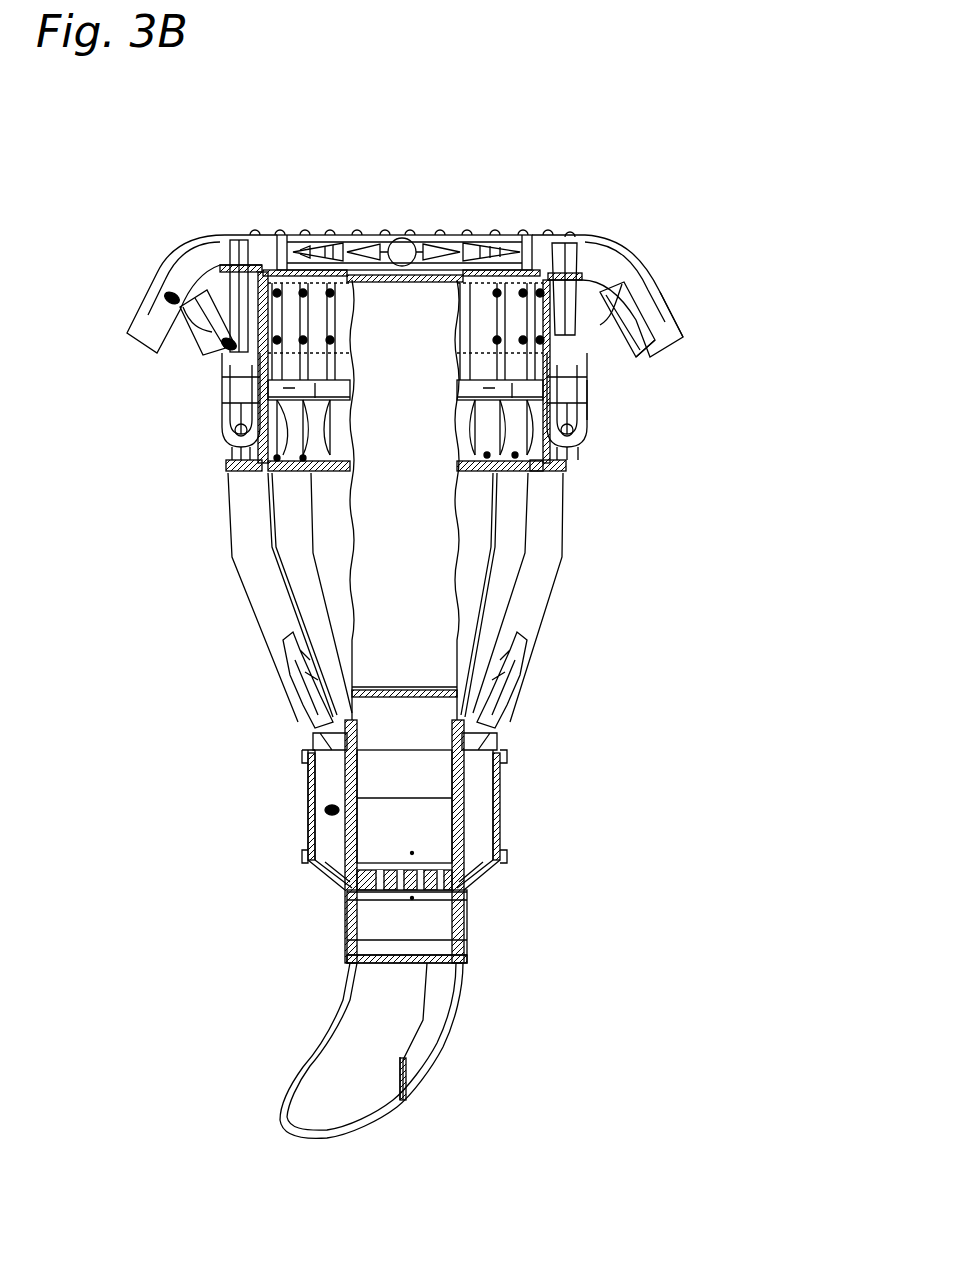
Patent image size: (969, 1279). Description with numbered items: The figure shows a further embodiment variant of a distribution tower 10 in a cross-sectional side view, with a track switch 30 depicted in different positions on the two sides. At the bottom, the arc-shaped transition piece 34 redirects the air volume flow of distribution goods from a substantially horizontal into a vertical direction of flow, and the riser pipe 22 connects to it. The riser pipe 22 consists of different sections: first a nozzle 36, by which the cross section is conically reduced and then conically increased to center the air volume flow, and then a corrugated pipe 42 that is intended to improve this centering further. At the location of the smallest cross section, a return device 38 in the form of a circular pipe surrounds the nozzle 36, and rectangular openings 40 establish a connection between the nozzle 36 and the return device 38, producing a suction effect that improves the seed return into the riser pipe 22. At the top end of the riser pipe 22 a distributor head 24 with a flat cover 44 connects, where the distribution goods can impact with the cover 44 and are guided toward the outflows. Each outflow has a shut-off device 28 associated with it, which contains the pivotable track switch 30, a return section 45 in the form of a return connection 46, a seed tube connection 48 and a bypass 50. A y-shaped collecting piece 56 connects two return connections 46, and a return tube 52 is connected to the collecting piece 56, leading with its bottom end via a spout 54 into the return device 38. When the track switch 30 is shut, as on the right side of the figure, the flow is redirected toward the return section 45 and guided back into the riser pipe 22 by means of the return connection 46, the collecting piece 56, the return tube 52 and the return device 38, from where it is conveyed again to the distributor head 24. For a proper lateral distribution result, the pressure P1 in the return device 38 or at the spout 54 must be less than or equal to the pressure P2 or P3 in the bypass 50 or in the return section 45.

The distribution tower 10 is at (528, 170).
The distributor head 24 is at (407, 222).
The cover 44 is at (412, 256).
The shut-off device 28 is at (675, 228).
The track switch 30 is at (246, 258).
The bypass 50 is at (232, 312).
The pressure P3 is at (172, 298).
The pressure P2 is at (227, 345).
The seed tube connection 48 is at (687, 338).
The return section 45 is at (635, 353).
The return connection 46 is at (591, 392).
The collecting piece 56 is at (571, 455).
The corrugated pipe 42 is at (414, 514).
The riser pipe 22 is at (345, 556).
The return tube 52 is at (566, 587).
The spout 54 is at (514, 713).
The return device 38 is at (508, 828).
The nozzle 36 is at (414, 833).
The openings 40 is at (387, 885).
The pressure P1 is at (330, 810).
The transition piece 34 is at (382, 1065).